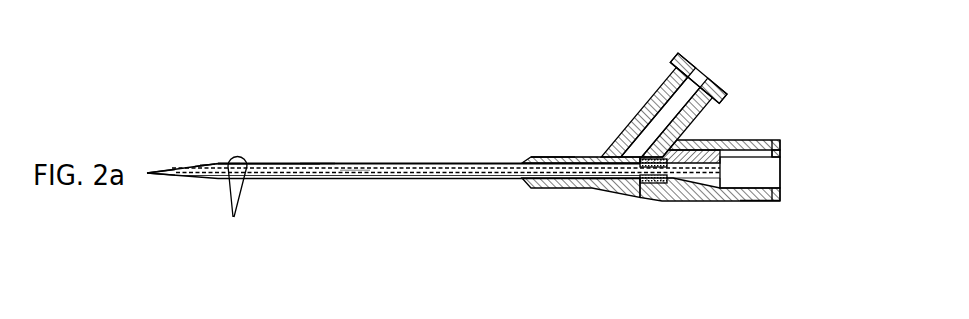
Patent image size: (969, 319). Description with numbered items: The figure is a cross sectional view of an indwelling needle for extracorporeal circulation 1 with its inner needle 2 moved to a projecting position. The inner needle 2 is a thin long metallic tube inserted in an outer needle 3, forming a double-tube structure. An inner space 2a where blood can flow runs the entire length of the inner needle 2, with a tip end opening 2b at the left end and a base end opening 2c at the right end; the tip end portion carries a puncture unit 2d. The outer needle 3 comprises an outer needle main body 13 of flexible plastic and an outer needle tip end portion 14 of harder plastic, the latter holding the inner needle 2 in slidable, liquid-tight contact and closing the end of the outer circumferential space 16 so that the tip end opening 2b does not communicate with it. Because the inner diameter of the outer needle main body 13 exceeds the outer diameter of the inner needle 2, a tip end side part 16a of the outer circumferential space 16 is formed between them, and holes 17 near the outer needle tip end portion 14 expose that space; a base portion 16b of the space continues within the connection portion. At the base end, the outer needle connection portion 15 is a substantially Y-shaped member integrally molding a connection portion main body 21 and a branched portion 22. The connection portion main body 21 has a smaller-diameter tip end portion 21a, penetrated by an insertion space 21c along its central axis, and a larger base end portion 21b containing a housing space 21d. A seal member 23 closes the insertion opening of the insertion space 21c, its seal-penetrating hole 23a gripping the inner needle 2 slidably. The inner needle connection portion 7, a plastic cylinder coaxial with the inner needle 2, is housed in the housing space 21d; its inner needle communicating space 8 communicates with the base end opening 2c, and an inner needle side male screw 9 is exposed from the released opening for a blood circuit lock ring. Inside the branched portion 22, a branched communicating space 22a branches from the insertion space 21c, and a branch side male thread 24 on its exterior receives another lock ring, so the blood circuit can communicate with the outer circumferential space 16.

The indwelling needle for extracorporeal circulation 1 is at (430, 120).
The inner needle 2 is at (303, 179).
The inner space 2a is at (355, 172).
The tip end opening 2b is at (160, 167).
The base end opening 2c is at (762, 200).
The puncture unit 2d is at (161, 175).
The outer needle 3 is at (313, 107).
The inner needle connection portion 7 is at (747, 152).
The inner needle communicating space 8 is at (748, 167).
The inner needle side male screw 9 is at (783, 148).
The outer needle main body 13 is at (320, 163).
The outer needle tip end portion 14 is at (206, 166).
The outer needle connection portion 15 is at (599, 144).
The outer circumferential space 16 is at (429, 187).
The tip end side part of outer circumferential space 16a is at (390, 163).
The proximal end of outer needle 16b is at (601, 188).
The holes 17 is at (235, 199).
The connection portion main body 21 is at (635, 195).
The tip end portion of connection portion main body 21a is at (556, 188).
The base end portion of connection portion main body 21b is at (705, 201).
The insertion space 21c is at (553, 161).
The housing space 21d is at (736, 147).
The branched portion 22 is at (635, 112).
The branched communicating space 22a is at (678, 101).
The seal member 23 is at (654, 200).
The seal-penetrating hole 23a is at (681, 139).
The branch side male thread 24 is at (718, 93).